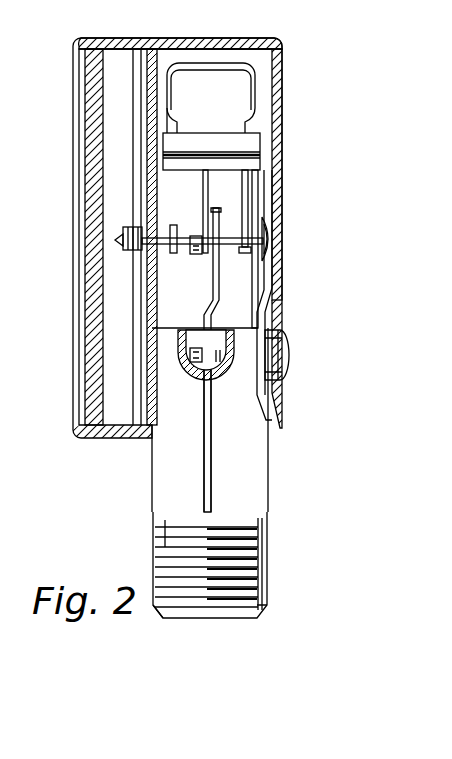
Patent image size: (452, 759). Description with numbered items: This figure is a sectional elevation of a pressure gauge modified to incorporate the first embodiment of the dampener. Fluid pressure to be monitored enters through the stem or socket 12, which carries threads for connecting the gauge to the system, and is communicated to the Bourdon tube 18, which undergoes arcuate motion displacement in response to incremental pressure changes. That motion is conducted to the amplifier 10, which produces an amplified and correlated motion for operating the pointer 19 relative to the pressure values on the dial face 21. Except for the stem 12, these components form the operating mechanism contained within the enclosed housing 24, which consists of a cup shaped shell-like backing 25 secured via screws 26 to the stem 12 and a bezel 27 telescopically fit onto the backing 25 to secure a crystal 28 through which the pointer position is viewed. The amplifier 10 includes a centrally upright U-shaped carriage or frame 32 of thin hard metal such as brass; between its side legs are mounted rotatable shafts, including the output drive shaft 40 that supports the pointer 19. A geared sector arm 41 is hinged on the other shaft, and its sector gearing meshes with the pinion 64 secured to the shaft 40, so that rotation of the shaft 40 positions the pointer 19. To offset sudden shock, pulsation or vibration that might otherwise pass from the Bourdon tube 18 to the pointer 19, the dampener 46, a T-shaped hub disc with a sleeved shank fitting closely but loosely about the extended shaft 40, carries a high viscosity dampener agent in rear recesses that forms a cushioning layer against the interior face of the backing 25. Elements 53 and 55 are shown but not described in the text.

The amplifier 10 is at (230, 217).
The stem or socket 12 is at (262, 503).
The Bourdon tube 18 is at (202, 104).
The pointer 19 is at (130, 126).
The dial face 21 is at (140, 63).
The enclosed housing 24 is at (242, 38).
The shell-like backing 25 is at (283, 89).
The screws 26 is at (291, 349).
The bezel 27 is at (110, 440).
The crystal 28 is at (83, 247).
The carriage or frame 32 is at (230, 260).
The output drive shaft 40 is at (142, 247).
The geared sector arm 41 is at (216, 207).
The dampener 46 is at (276, 249).
The connecting rod 53 is at (218, 466).
The bushing 55 is at (210, 366).
The pinion 64 is at (195, 254).